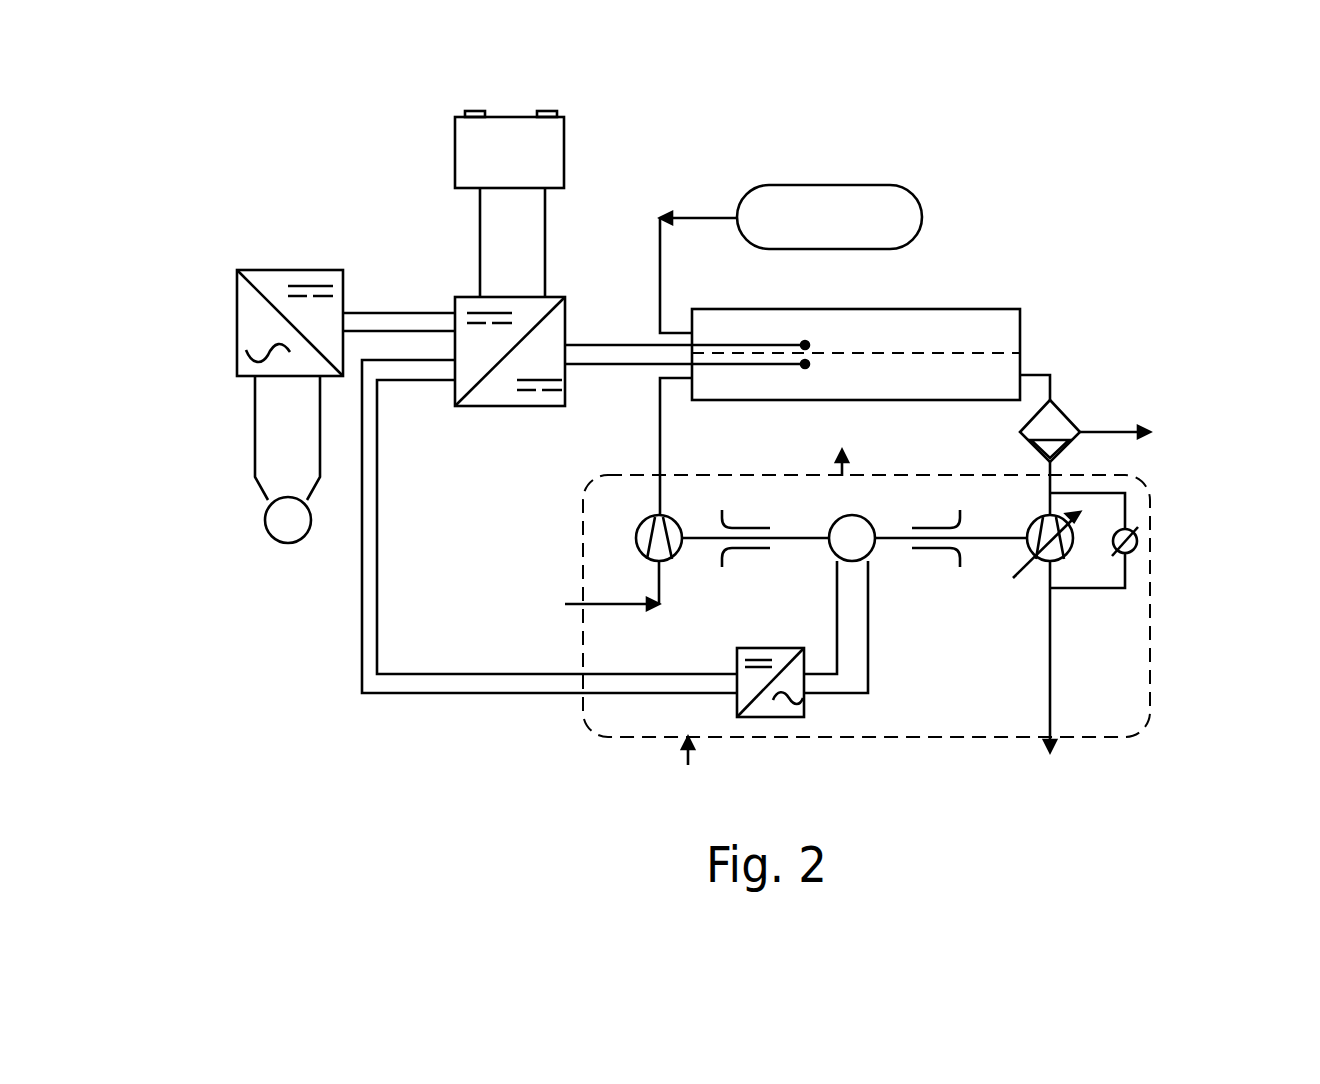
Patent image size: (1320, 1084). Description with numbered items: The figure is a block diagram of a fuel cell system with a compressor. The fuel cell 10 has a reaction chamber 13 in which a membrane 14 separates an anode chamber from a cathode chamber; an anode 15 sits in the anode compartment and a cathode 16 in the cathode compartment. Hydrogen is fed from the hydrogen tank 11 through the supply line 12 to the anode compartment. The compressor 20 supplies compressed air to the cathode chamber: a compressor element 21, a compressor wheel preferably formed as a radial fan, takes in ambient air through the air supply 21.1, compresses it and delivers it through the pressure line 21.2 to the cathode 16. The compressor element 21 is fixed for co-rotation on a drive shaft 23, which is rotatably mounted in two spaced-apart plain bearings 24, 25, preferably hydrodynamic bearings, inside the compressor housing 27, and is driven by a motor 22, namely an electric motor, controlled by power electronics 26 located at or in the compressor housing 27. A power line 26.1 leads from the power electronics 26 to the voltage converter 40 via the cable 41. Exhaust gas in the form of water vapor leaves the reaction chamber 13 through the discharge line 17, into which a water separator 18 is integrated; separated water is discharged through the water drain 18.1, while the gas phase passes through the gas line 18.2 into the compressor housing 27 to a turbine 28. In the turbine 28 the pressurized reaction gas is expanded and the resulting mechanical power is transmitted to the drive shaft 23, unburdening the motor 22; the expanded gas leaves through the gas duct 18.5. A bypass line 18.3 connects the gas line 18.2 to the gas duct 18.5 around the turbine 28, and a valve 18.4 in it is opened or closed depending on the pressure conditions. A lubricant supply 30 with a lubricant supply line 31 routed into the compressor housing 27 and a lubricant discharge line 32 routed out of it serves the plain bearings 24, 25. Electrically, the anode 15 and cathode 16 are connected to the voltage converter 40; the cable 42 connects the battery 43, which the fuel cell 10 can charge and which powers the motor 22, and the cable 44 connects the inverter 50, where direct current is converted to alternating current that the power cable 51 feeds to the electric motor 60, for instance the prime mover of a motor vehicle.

The fuel cell 10 is at (1030, 290).
The hydrogen tank 11 is at (905, 205).
The supply line 12 is at (718, 217).
The reaction chamber 13 is at (1020, 342).
The membrane 14 is at (918, 353).
The anode 15 is at (760, 342).
The cathode 16 is at (740, 368).
The discharge line 17 is at (1050, 388).
The water separator 18 is at (1060, 422).
The water drain 18.1 is at (1145, 418).
The gas line 18.2 is at (1135, 448).
The bypass line 18.3 is at (1128, 512).
The valve 18.4 is at (1140, 541).
The gas duct 18.5 is at (1052, 655).
The compressor 20 is at (577, 735).
The compressor element 21 is at (638, 536).
The air supply 21.1 is at (612, 599).
The pressure line 21.2 is at (660, 462).
The motor 22 is at (865, 556).
The drive shaft 23 is at (810, 541).
The plain bearing 24 is at (742, 552).
The plain bearing 25 is at (948, 552).
The power electronics 26 is at (773, 706).
The power line 26.1 is at (870, 662).
The compressor housing 27 is at (1027, 661).
The turbine 28 is at (1060, 552).
The lubricant supply 30 is at (686, 770).
The lubricant supply line 31 is at (685, 742).
The lubricant discharge line 32 is at (845, 466).
The voltage converter 40 is at (474, 310).
The cable 41 is at (377, 480).
The cable 42 is at (547, 242).
The battery 43 is at (555, 142).
The cable 44 is at (395, 318).
The inverter 50 is at (248, 318).
The power cable 51 is at (258, 412).
The electric motor 60 is at (268, 525).